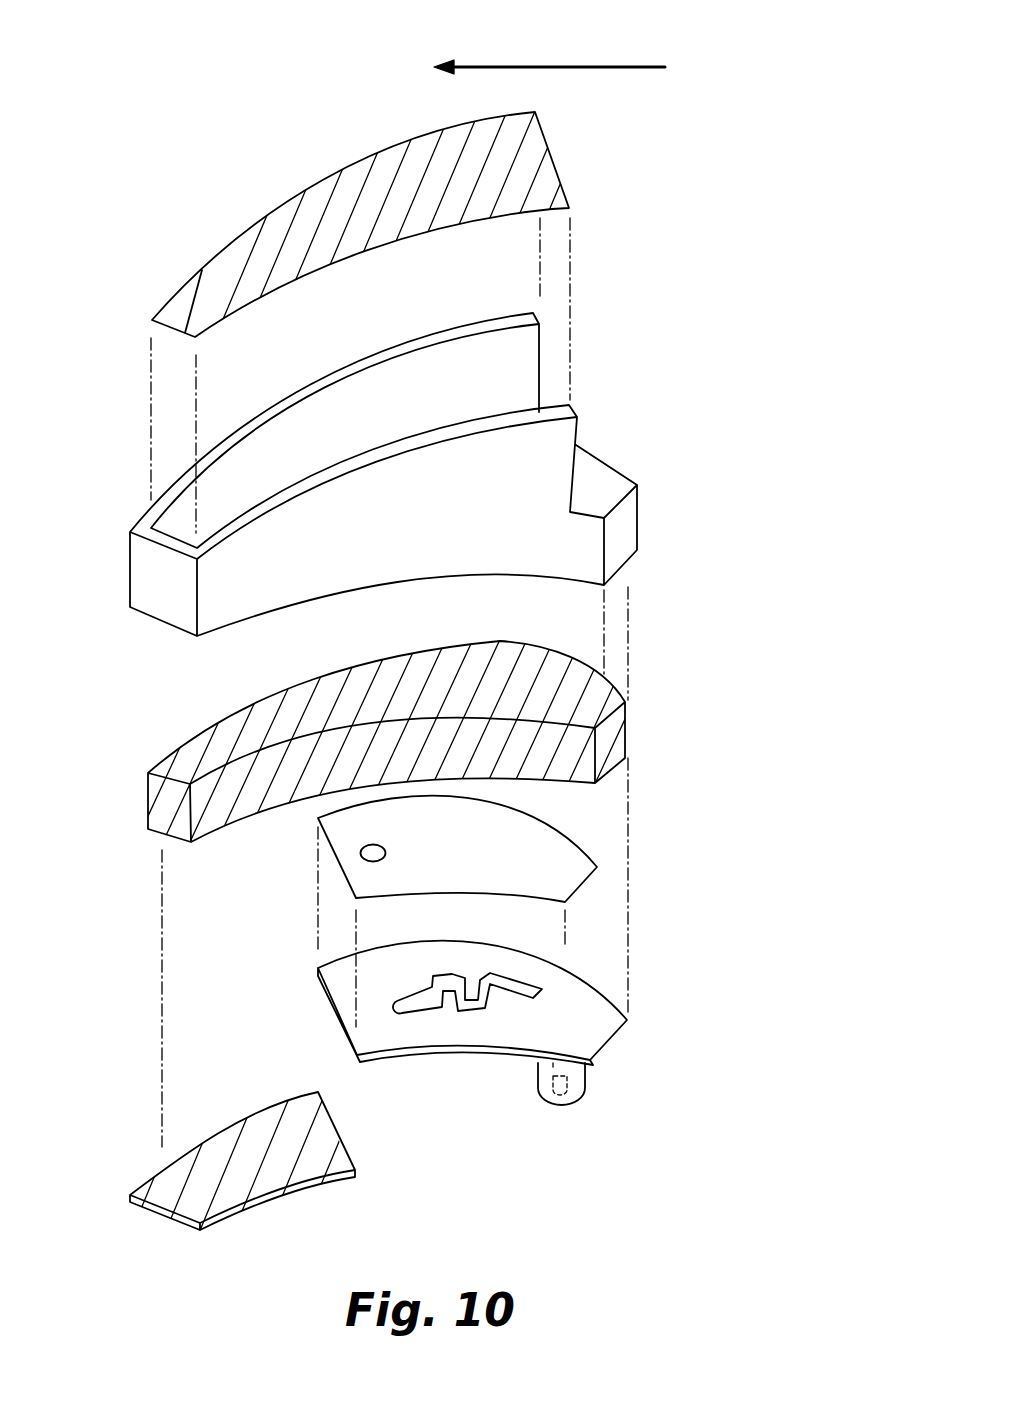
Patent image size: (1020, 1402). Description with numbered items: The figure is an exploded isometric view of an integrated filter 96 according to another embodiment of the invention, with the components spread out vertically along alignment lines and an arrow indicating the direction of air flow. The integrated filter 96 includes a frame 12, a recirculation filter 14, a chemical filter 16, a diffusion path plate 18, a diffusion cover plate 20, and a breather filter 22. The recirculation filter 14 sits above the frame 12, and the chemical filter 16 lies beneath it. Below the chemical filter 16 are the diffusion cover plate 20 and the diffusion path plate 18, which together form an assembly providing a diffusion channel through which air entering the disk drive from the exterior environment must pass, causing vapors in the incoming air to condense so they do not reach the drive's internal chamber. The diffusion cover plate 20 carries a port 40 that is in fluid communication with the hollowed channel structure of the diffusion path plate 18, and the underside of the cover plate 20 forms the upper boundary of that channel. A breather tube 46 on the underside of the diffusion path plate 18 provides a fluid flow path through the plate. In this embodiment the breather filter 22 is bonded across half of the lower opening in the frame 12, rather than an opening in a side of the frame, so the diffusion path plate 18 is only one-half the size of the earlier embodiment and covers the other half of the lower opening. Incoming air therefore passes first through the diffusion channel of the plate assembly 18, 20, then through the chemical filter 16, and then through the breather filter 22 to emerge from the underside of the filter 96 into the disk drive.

The integrated filter 96 is at (178, 121).
The recirculation filter 14 is at (200, 270).
The frame 12 is at (145, 568).
The chemical filter 16 is at (187, 760).
The diffusion cover plate 20 is at (557, 847).
The port 40 is at (373, 862).
The diffusion path plate 18 is at (598, 972).
The breather tube 46 is at (568, 1107).
The breather filter 22 is at (262, 1138).